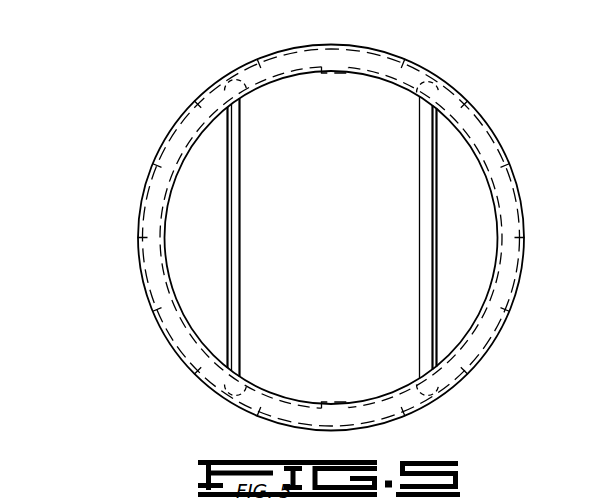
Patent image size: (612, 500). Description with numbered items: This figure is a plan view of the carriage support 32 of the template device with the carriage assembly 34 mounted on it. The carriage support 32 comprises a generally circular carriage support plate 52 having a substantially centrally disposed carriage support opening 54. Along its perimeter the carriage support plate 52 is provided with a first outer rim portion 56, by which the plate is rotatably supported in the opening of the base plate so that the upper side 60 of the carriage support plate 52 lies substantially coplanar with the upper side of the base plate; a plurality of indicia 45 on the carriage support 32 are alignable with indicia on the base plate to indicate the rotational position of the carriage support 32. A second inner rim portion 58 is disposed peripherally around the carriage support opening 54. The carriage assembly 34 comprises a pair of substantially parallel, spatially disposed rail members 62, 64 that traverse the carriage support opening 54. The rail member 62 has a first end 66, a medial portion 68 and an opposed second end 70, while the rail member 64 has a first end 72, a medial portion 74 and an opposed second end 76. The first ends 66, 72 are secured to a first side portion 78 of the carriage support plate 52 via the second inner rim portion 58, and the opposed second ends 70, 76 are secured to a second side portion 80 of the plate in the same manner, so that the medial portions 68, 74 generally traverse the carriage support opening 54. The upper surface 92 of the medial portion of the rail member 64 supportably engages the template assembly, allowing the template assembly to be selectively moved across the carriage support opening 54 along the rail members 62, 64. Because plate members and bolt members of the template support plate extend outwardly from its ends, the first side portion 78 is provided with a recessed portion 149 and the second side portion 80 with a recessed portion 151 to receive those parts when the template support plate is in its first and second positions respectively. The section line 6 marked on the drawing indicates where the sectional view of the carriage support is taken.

The section line 6- 6 is at (446, 348).
The carriage support 32 is at (504, 124).
The carriage assembly 34 is at (444, 242).
The indicia 45 is at (344, 56).
The carriage support plate 52 is at (454, 82).
The carriage support opening 54 is at (346, 196).
The first outer rim portion 56 is at (134, 180).
The second inner rim portion 58 is at (174, 212).
The upper side 60 is at (190, 130).
The rail member 62 is at (246, 196).
The rail member 64 is at (416, 172).
The first end 66 is at (262, 386).
The medial portion 68 is at (242, 254).
The second end 70 is at (260, 96).
The first end 72 is at (414, 388).
The medial portion 74 is at (432, 268).
The second end 76 is at (412, 100).
The first side portion 78 is at (282, 398).
The second side portion 80 is at (378, 98).
The upper surface 92 is at (432, 276).
The recessed portion 149 is at (338, 402).
The recessed portion 151 is at (328, 76).